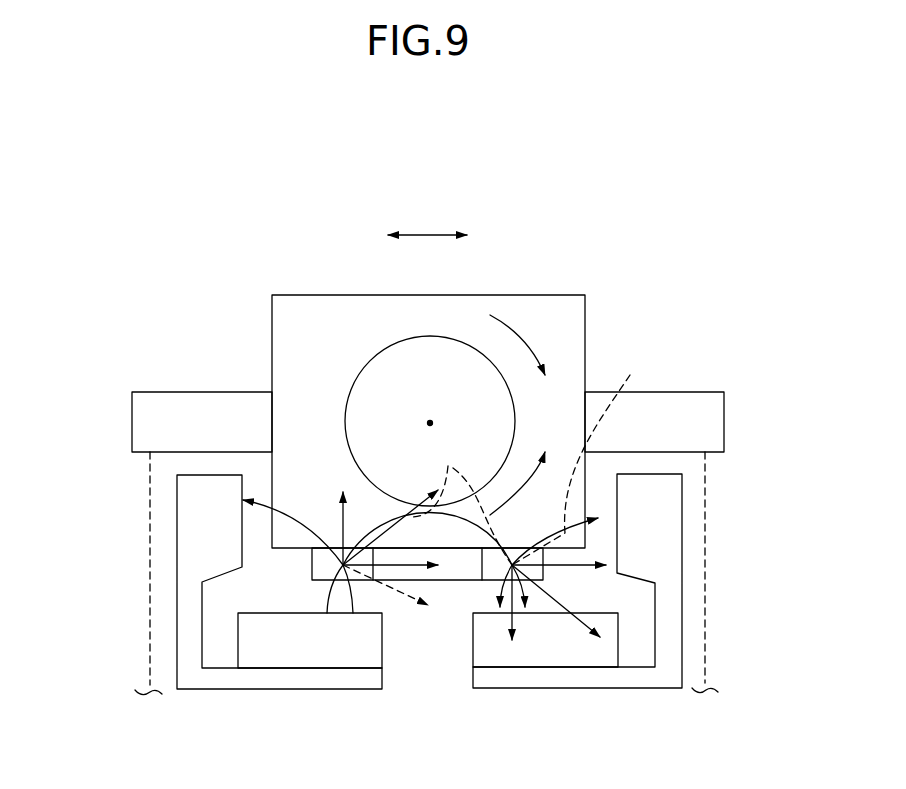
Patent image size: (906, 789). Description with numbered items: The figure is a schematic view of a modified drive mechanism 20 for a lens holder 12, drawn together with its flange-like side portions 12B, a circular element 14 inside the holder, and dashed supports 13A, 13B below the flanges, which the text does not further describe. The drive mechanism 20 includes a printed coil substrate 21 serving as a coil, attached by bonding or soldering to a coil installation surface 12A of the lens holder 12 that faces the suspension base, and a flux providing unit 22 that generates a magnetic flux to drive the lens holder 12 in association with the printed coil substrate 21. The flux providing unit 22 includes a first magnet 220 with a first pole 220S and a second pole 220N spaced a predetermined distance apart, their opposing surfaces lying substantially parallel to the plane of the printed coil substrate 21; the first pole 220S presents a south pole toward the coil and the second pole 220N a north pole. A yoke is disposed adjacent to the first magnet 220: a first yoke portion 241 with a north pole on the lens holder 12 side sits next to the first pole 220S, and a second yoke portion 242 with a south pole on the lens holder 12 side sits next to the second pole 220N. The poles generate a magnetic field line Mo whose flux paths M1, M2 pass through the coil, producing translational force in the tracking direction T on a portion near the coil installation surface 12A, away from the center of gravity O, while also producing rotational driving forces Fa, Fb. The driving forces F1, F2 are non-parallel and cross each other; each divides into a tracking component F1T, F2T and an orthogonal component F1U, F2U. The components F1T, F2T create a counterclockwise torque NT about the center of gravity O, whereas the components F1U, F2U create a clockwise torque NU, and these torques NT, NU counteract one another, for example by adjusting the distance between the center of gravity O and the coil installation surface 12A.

The drive mechanism 20 is at (608, 283).
The lens holder 12 is at (332, 313).
The coil installation surface 12A is at (298, 548).
The flange portion of frame 12B is at (203, 407).
The rotor 14 is at (447, 357).
The printed coil substrate 21 is at (462, 582).
The flux providing unit 22 is at (482, 698).
The first magnet 220 is at (378, 703).
The second pole 220N is at (283, 655).
The first pole 220S is at (562, 658).
The first yoke portion 241 is at (668, 592).
The second yoke portion 242 is at (190, 592).
The support member (13D) 13A is at (148, 675).
The support member (13C) 13B is at (707, 680).
The tracking direction T is at (427, 218).
The center of gravity O is at (431, 423).
The torque NU is at (525, 342).
The torque NT is at (530, 476).
The magnetic field line Mo is at (462, 500).
The driving force Fb is at (577, 455).
The component of force F1U is at (333, 507).
The component of force F1T is at (413, 565).
The driving force F1 is at (403, 500).
The driving force Fa is at (398, 600).
The first magnetic flux path M1 is at (282, 505).
The second magnetic flux path M2 is at (525, 548).
The component of force F2T is at (520, 552).
The driving force F2 is at (548, 598).
The component of force F2U is at (513, 622).